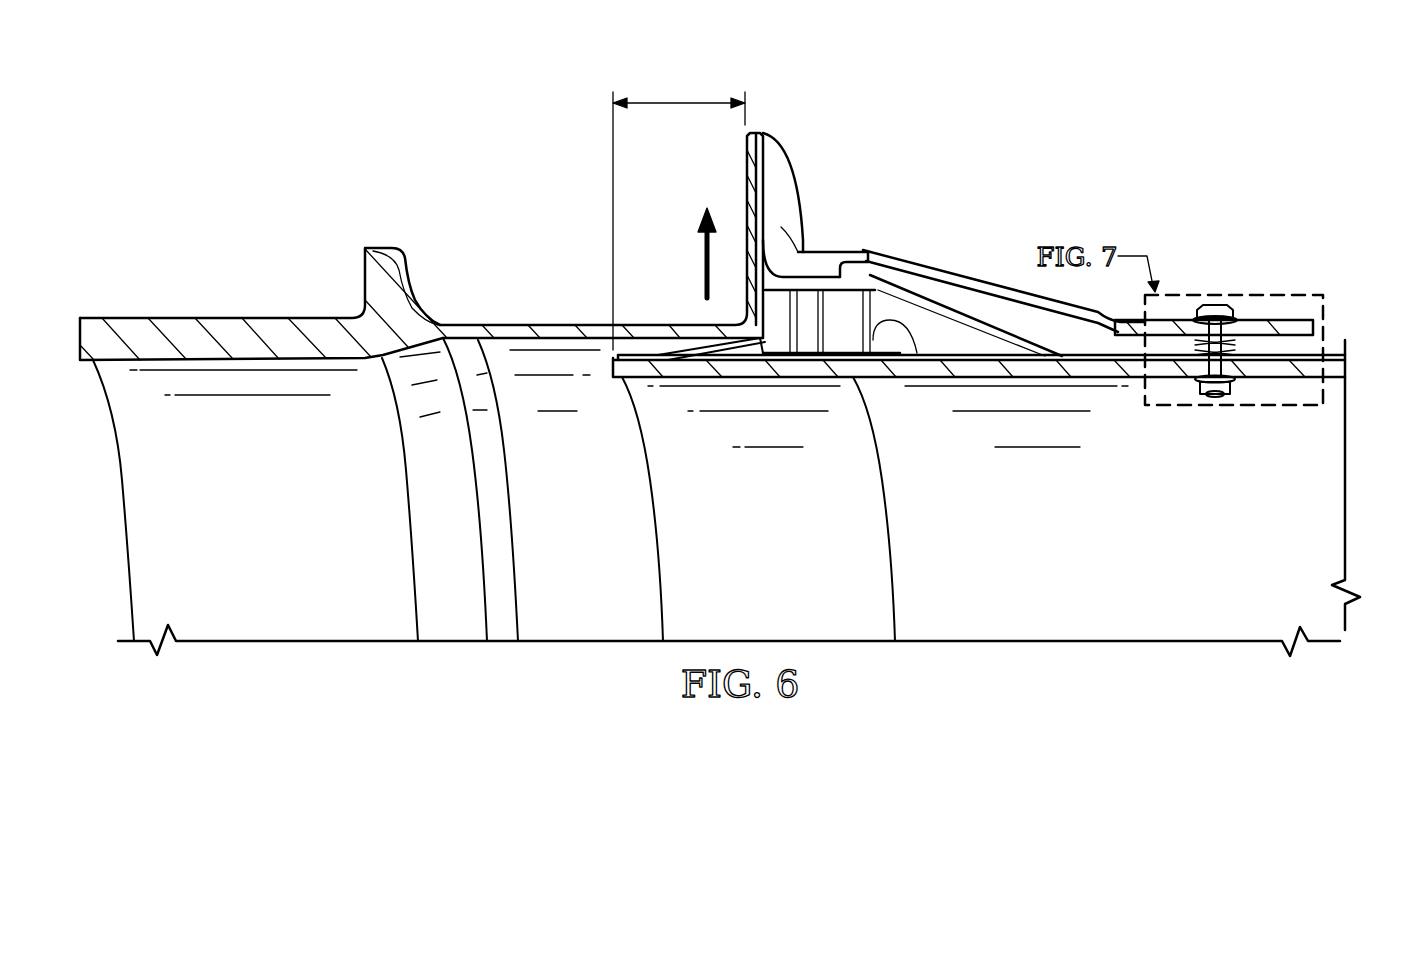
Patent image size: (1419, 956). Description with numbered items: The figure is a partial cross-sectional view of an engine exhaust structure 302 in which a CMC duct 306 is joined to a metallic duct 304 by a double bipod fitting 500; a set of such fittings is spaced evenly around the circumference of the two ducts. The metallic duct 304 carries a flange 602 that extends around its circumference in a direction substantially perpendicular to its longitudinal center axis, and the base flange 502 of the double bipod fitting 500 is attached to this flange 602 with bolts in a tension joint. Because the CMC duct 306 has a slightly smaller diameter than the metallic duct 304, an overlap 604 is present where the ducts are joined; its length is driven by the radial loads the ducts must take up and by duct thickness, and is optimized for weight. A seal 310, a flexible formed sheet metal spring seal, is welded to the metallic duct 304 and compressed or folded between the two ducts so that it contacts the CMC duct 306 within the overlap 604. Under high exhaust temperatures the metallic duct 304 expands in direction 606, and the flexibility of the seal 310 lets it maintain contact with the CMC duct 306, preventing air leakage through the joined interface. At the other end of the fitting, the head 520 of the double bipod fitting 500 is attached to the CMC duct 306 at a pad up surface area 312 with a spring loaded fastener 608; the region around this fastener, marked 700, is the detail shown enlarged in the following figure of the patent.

The engine exhaust structure 302 is at (1170, 178).
The metallic duct 304 is at (142, 562).
The CMC duct 306 is at (1330, 515).
The seal 310 is at (643, 355).
The pad up surface area 312 is at (1270, 380).
The double bipod fitting 500 is at (913, 218).
The base flange 502 is at (778, 160).
The head 520 is at (1263, 320).
The flange 602 is at (740, 200).
The overlap 604 is at (680, 103).
The direction 606 is at (703, 250).
The spring loaded fastener 608 is at (1213, 305).
The fastener assembly detail region 700 is at (1182, 410).